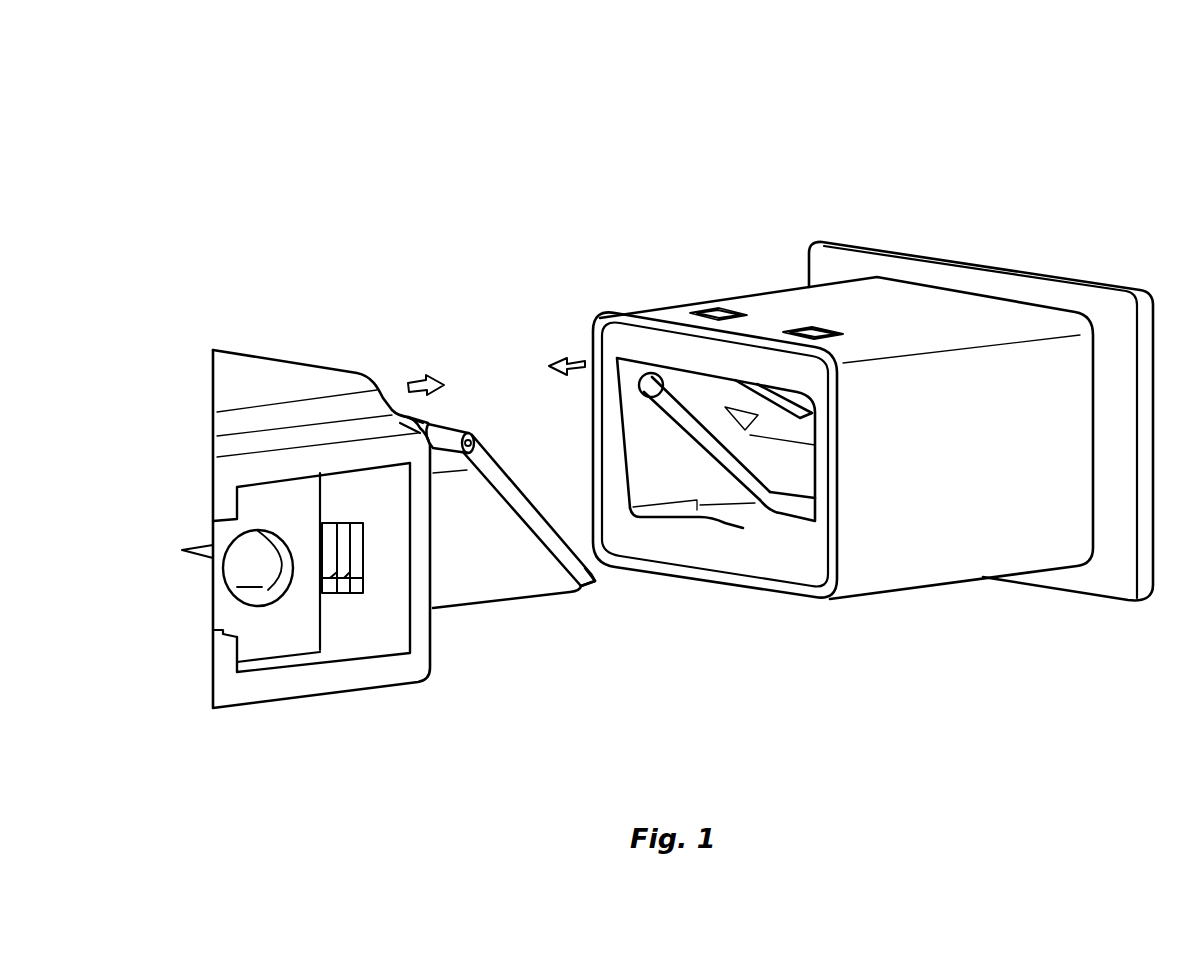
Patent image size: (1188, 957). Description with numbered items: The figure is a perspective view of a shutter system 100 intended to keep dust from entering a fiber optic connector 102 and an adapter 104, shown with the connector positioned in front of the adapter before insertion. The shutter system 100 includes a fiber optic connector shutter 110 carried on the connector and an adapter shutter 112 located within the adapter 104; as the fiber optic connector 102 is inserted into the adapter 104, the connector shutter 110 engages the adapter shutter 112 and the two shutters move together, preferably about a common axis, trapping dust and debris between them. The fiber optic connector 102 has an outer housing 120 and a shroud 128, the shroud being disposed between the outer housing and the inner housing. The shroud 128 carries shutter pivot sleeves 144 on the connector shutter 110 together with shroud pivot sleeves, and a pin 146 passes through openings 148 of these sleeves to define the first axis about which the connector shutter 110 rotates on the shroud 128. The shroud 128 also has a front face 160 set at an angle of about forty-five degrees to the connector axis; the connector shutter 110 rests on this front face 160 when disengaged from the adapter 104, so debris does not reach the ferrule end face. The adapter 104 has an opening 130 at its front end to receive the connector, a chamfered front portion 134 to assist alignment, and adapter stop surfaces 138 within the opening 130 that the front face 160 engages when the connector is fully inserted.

The shutter system 100 is at (774, 163).
The fiber optic connector 102 is at (384, 688).
The adapter 104 is at (911, 591).
The fiber optic connector shutter 110 is at (528, 485).
The adapter shutter 112 is at (707, 388).
The outer housing 120 is at (275, 377).
The shroud 128 is at (527, 593).
The opening 130 is at (693, 527).
The chamfered front portion 134 is at (715, 565).
The adapter stop surfaces 138 is at (793, 502).
The shutter pivot sleeves 144 is at (450, 423).
The pin 146 is at (472, 432).
The openings 148 is at (473, 443).
The front face 160 is at (591, 577).